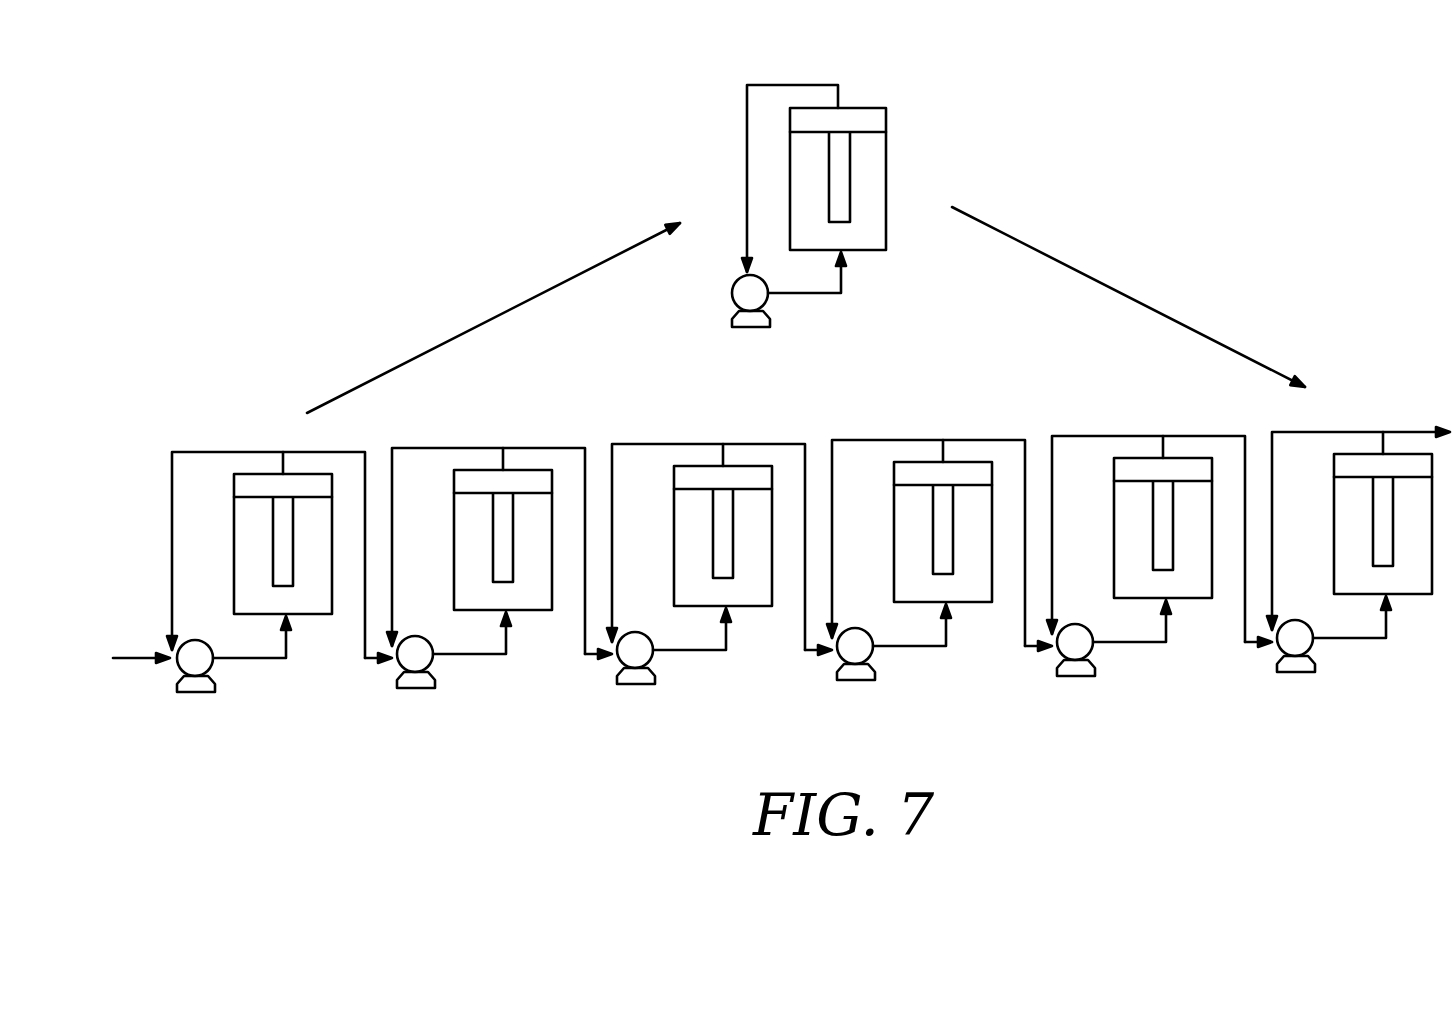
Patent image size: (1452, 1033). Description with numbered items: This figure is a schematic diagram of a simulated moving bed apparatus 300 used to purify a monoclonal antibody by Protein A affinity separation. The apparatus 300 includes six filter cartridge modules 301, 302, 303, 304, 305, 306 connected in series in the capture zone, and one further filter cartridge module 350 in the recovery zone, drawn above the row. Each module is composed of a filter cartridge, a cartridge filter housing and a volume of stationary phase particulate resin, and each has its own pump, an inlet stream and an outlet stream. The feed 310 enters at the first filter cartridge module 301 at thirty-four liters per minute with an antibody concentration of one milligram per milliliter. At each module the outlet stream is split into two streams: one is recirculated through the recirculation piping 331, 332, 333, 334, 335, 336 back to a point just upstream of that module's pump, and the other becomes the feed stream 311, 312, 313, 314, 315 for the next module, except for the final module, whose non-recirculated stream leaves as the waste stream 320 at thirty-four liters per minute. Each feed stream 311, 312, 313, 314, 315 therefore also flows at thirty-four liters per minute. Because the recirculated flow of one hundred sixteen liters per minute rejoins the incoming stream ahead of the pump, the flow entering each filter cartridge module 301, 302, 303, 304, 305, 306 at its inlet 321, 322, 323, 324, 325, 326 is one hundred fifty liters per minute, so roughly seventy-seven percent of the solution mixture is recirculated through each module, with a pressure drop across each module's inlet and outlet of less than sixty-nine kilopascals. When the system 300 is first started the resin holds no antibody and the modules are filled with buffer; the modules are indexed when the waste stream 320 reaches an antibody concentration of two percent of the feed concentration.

The simulated moving bed apparatus 300 is at (1233, 287).
The filter cartridge module 350 is at (902, 97).
The feed 310 is at (141, 629).
The waste stream 320 is at (1420, 399).
The filter cartridge module 301 is at (244, 702).
The filter cartridge module 302 is at (474, 702).
The filter cartridge module 303 is at (694, 698).
The filter cartridge module 304 is at (914, 694).
The filter cartridge module 305 is at (1134, 690).
The filter cartridge module 306 is at (1354, 686).
The feed stream 311 is at (365, 694).
The feed stream 312 is at (585, 690).
The feed stream 313 is at (805, 686).
The feed stream 314 is at (1025, 682).
The feed stream 315 is at (1245, 678).
The inlet 321 is at (280, 657).
The inlet 322 is at (500, 653).
The inlet 323 is at (720, 649).
The inlet 324 is at (940, 645).
The inlet 325 is at (1160, 641).
The inlet 326 is at (1380, 637).
The recirculation piping 331 is at (243, 531).
The recirculation piping 332 is at (463, 527).
The recirculation piping 333 is at (683, 523).
The recirculation piping 334 is at (903, 519).
The recirculation piping 335 is at (1123, 515).
The recirculation piping 336 is at (1330, 507).